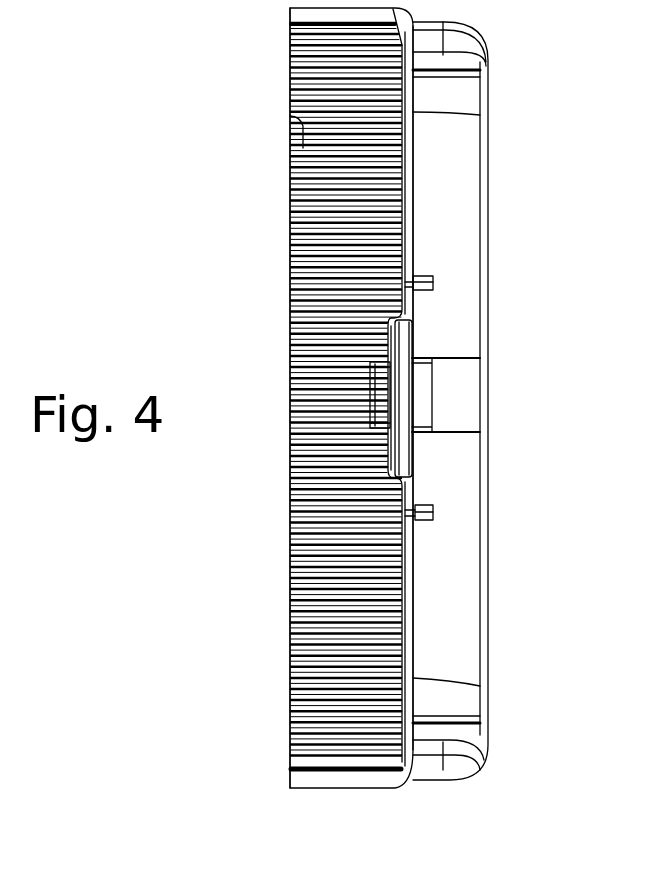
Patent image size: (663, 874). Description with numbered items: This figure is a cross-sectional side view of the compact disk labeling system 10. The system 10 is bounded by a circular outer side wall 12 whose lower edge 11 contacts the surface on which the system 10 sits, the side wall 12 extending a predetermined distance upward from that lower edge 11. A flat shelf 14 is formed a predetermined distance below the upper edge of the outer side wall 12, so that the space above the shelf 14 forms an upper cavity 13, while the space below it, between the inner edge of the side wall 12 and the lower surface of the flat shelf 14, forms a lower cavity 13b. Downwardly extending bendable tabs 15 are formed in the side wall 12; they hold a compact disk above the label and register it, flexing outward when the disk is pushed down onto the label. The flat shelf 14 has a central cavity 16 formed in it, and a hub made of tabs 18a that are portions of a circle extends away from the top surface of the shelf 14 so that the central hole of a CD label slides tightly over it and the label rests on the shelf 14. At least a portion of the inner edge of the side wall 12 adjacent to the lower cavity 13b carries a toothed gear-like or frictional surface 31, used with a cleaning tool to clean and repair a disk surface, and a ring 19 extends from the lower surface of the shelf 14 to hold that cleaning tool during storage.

The compact disk labeling system 10 is at (198, 76).
The lower edge 11 is at (290, 16).
The outer side wall 12 is at (466, 323).
The upper cavity 13 is at (456, 202).
The lower cavity 13b is at (266, 325).
The flat shelf 14 is at (414, 598).
The tabs 15 is at (458, 102).
The central cavity 16 is at (405, 455).
The tabs 18a is at (428, 274).
The ring 19 is at (378, 432).
The toothed gear-like surface 31 is at (290, 117).